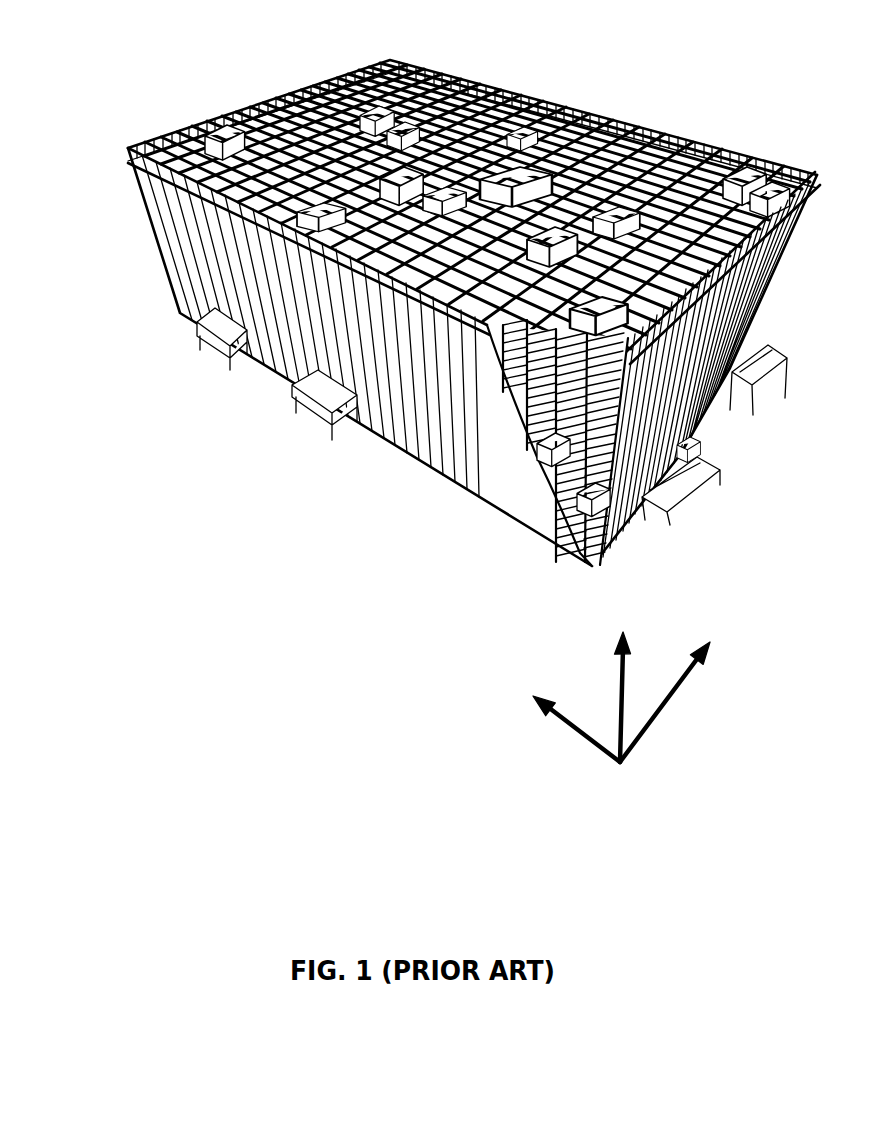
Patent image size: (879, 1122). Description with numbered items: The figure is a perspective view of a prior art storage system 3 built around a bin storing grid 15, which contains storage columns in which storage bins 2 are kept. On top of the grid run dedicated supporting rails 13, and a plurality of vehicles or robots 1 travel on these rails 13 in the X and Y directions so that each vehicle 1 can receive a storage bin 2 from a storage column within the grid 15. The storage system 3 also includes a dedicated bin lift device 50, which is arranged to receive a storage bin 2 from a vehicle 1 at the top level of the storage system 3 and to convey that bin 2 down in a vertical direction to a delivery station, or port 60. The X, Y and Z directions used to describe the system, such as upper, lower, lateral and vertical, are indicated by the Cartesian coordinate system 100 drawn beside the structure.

The vehicle 1 is at (483, 97).
The storage bin 2 is at (540, 100).
The storage system 3 is at (113, 80).
The supporting rails 13 is at (623, 150).
The bin storing grid 15 is at (112, 264).
The bin lift device 50 is at (318, 333).
The port 60 is at (325, 402).
The Cartesian coordinate system 100 is at (467, 655).